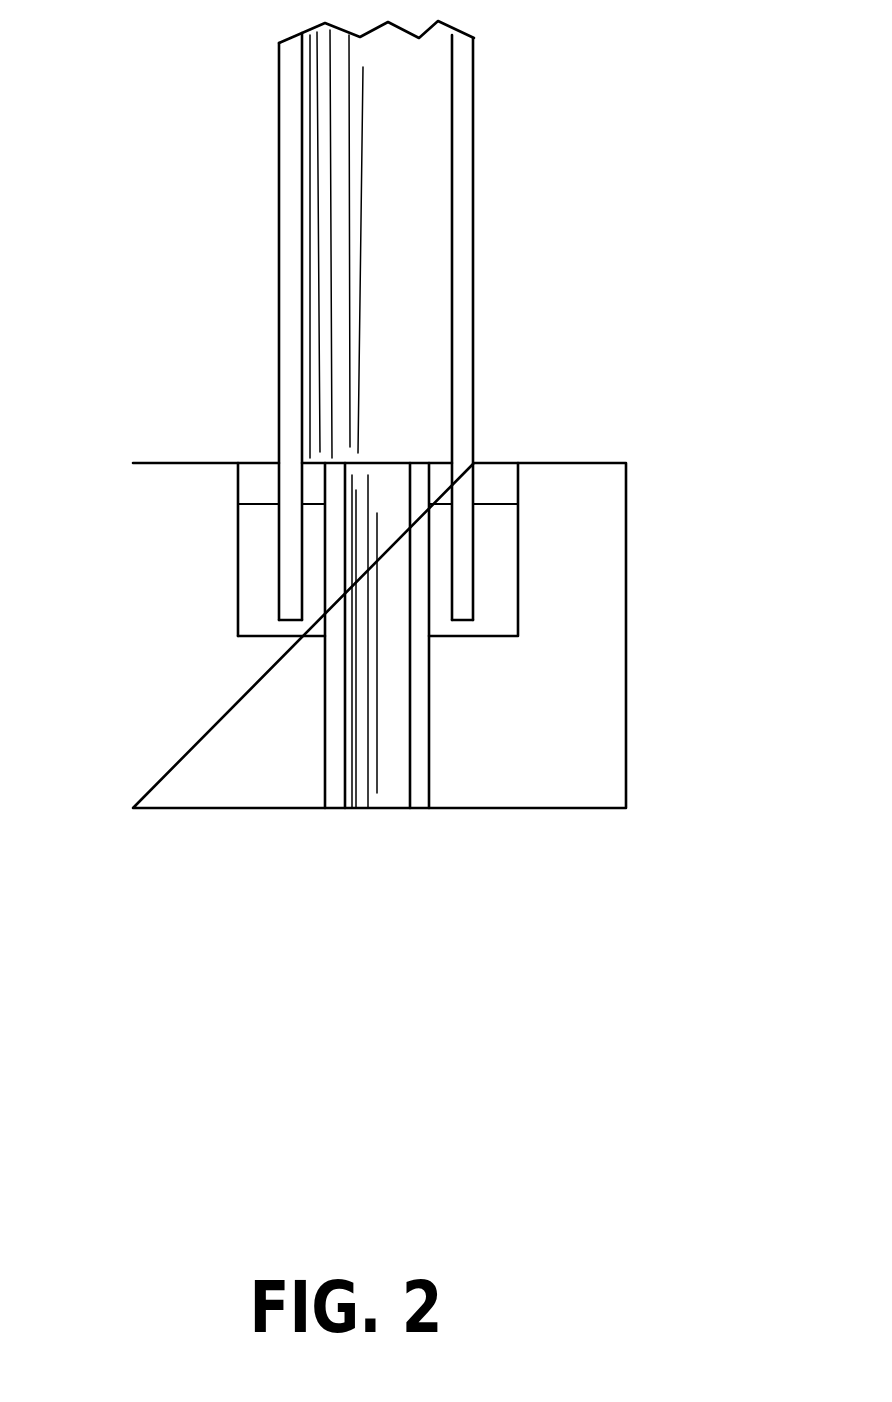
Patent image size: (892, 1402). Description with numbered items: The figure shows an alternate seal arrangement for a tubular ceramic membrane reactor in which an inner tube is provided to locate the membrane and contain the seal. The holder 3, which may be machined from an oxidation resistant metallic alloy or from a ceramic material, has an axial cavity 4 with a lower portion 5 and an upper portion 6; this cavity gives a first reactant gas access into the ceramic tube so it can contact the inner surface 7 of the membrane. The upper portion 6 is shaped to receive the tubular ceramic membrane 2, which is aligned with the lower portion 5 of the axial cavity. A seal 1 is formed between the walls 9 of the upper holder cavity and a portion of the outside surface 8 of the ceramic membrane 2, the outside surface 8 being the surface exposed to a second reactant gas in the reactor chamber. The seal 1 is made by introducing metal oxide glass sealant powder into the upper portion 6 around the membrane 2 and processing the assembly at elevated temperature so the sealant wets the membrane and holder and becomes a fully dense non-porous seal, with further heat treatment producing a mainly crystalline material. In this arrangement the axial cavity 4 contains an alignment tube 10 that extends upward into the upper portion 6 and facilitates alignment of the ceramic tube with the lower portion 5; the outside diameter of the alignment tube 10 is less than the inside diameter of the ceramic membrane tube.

The seal 1 is at (262, 575).
The tubular ceramic membrane 2 is at (463, 358).
The holder 3 is at (554, 746).
The axial cavity 4 is at (374, 810).
The lower portion of the axial cavity 5 is at (327, 793).
The upper portion of the axial cavity 6 is at (518, 548).
The inner surface of the membrane 7 is at (453, 253).
The outside surface of the ceramic membrane 8 is at (473, 183).
The walls of the upper holder cavity 9 is at (240, 605).
The alignment tube 10 is at (327, 757).